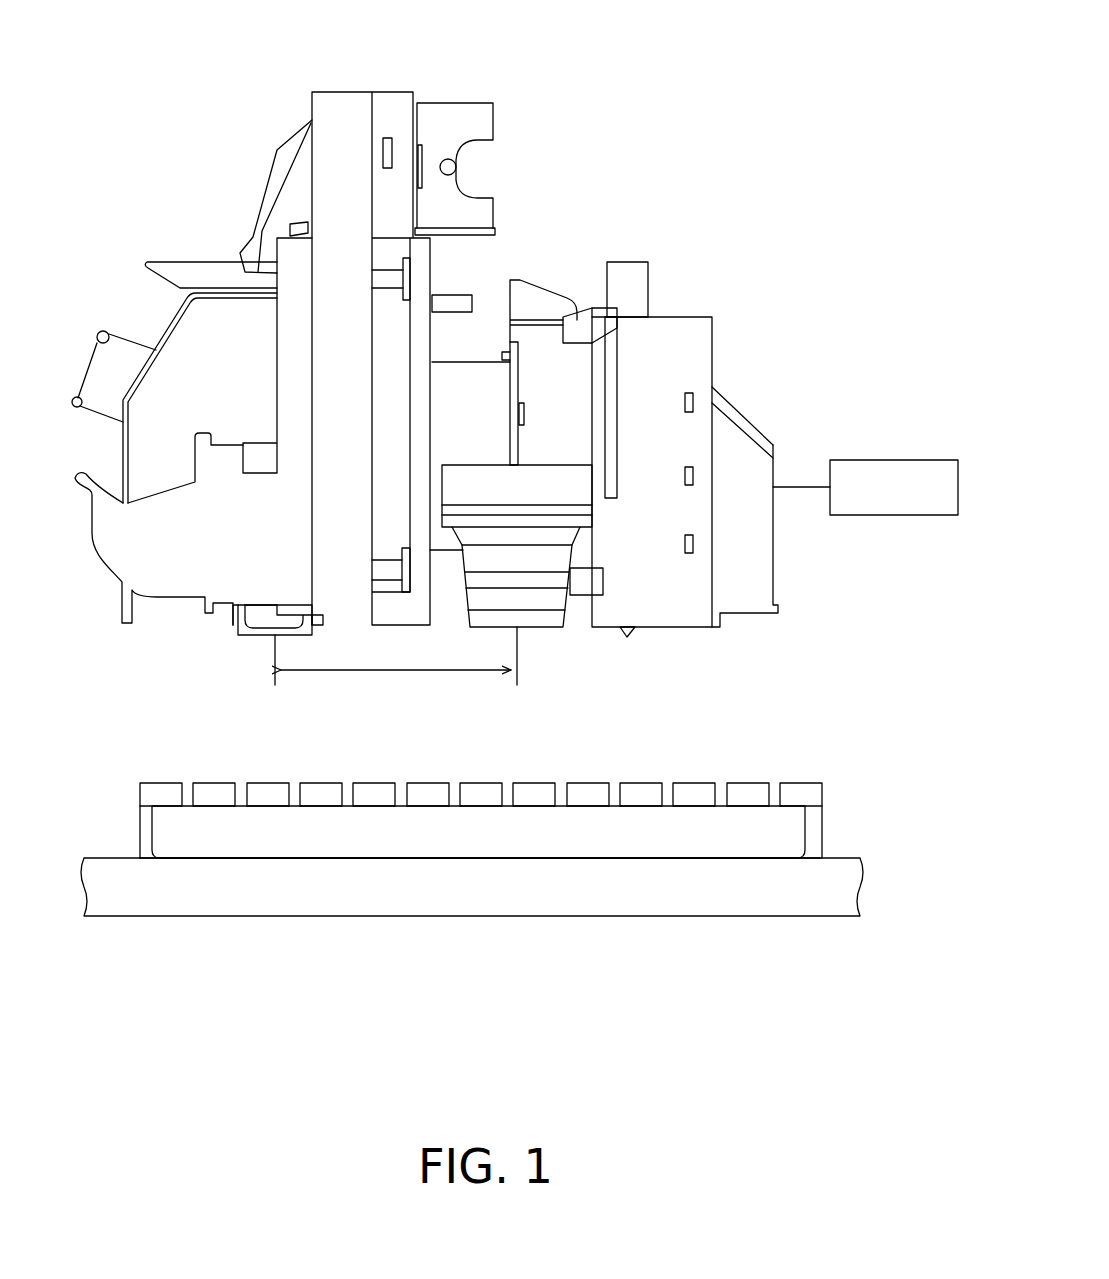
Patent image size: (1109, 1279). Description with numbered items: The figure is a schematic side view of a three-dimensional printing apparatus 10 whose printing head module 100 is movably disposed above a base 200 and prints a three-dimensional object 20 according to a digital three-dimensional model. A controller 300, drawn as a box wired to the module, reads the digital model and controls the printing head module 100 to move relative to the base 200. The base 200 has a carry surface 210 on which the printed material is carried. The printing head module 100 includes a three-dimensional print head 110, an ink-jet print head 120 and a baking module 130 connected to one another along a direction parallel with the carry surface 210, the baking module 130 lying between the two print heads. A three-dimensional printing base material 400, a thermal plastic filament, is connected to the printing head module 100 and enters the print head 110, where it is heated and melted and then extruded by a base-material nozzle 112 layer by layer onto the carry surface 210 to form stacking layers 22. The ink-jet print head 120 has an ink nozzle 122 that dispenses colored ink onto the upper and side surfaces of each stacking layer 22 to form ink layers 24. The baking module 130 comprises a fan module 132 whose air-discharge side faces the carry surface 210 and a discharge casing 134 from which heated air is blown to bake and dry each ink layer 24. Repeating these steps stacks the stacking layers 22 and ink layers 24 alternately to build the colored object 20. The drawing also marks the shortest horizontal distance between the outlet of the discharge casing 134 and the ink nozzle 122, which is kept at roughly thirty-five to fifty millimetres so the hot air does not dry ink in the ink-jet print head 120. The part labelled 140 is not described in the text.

The 3-D printing apparatus 10 is at (836, 1027).
The 3-D object 20 is at (90, 737).
The stacking layers 22 is at (162, 830).
The ink layers 24 is at (160, 792).
The printing head module 100 is at (761, 151).
The 3-D print head 110 is at (697, 357).
The base-material nozzle 112 is at (632, 636).
The ink-jet print head 120 is at (183, 328).
The ink nozzle 122 is at (271, 638).
The baking module 130 is at (537, 455).
The fan module 132 is at (558, 493).
The discharge casing 134 is at (550, 620).
The cover 140 is at (735, 450).
The base 200 is at (640, 895).
The carry surface 210 is at (838, 858).
The controller 300 is at (902, 460).
The 3-D printing base material 400 is at (640, 287).